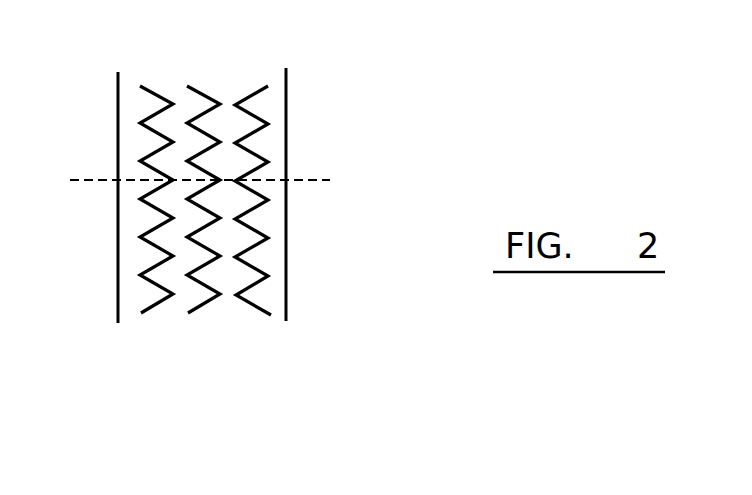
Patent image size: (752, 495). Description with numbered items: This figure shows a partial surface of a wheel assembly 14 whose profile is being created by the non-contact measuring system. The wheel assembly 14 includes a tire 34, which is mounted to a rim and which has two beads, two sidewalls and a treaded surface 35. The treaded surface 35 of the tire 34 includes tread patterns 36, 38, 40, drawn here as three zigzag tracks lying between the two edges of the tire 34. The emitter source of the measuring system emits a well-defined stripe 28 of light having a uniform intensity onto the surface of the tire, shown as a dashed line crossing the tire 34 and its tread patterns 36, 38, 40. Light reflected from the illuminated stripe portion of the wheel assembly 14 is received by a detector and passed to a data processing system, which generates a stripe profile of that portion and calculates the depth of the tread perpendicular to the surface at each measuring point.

The wheel assembly 14 is at (407, 145).
The stripe of light 28 is at (107, 181).
The tire 34 is at (285, 102).
The treaded surface 35 is at (187, 76).
The tread pattern 36 is at (162, 302).
The tread pattern 38 is at (207, 304).
The tread pattern 40 is at (252, 304).